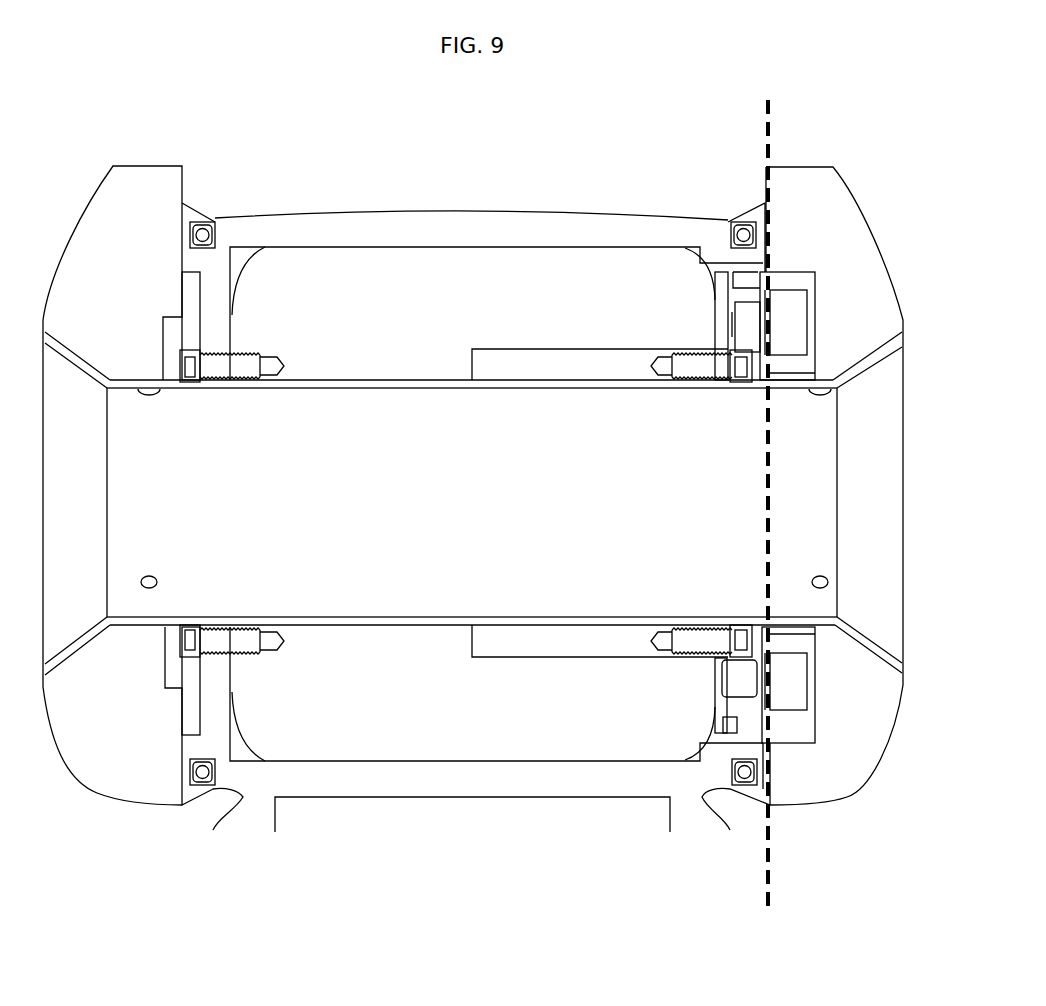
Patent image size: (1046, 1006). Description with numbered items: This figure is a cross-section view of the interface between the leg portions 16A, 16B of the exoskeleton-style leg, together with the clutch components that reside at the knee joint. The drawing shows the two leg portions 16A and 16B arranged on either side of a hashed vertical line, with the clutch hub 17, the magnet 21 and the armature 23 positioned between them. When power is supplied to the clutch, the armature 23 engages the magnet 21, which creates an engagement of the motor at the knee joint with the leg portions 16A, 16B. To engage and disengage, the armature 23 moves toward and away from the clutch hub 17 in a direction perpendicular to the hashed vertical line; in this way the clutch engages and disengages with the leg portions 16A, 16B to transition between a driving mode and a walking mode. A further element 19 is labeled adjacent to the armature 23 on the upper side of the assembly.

The leg portion 16A is at (843, 210).
The leg portion 16B is at (554, 220).
The clutch hub 17 is at (718, 327).
The guide member 19 is at (810, 362).
The magnet 21 is at (808, 643).
The armature 23 is at (750, 283).